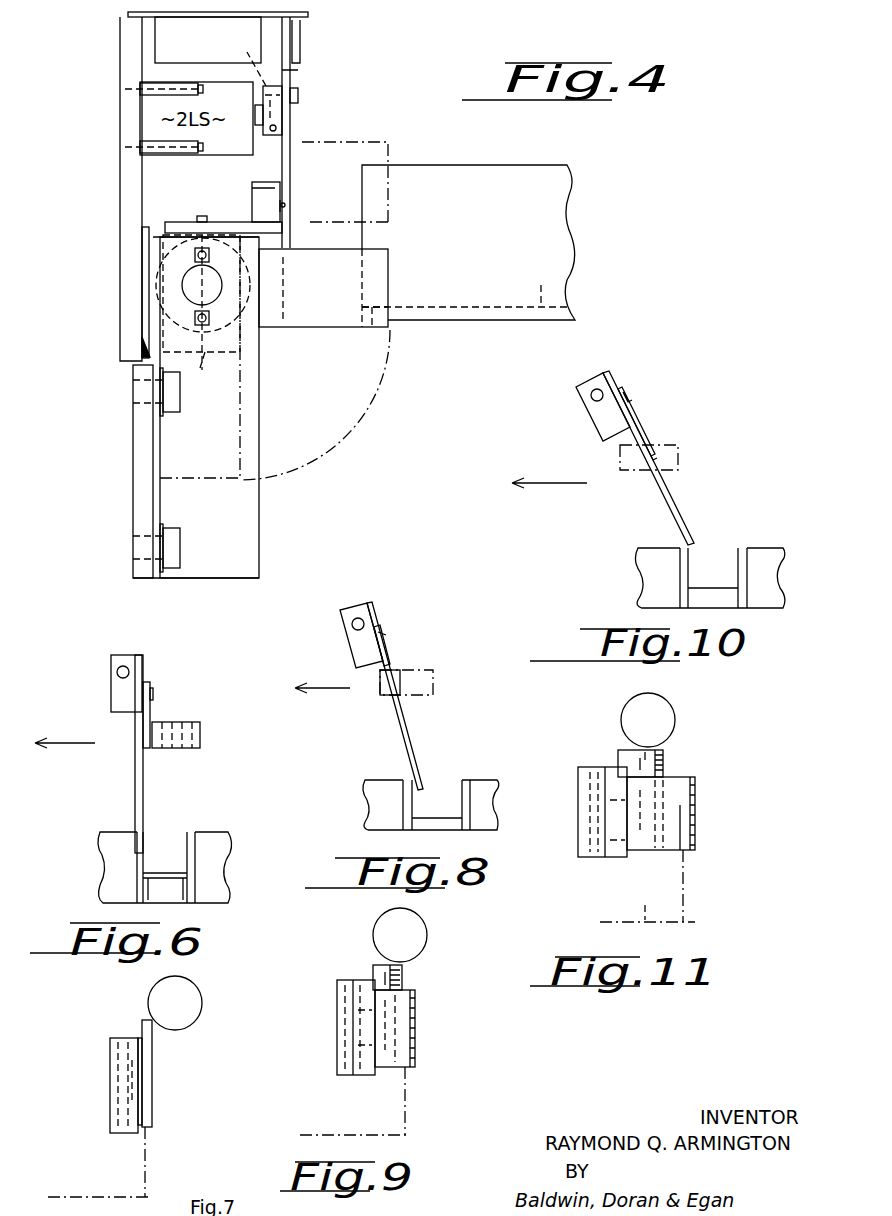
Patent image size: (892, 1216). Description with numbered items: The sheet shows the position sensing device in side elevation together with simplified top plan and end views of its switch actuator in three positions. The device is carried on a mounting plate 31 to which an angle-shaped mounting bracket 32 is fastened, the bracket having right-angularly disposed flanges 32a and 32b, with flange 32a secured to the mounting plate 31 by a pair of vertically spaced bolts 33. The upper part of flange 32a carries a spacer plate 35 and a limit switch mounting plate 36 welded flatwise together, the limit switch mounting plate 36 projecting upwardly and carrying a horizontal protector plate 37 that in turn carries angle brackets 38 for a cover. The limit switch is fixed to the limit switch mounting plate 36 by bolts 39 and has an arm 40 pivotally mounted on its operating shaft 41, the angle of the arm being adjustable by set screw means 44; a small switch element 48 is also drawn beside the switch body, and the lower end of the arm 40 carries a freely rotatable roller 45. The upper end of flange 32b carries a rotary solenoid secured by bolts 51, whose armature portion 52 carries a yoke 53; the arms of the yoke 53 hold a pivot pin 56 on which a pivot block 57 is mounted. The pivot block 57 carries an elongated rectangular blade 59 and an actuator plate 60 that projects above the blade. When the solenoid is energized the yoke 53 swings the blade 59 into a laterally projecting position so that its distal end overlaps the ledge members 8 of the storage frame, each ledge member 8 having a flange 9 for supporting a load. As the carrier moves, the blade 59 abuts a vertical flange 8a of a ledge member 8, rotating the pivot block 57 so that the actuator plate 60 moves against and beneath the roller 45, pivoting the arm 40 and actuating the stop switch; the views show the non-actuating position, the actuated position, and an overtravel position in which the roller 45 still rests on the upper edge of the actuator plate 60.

In FIG. 4, the ledge member 8 is at (578, 186).
In FIG. 10, the ledge member 8 is at (785, 555).
In FIG. 6, the ledge member 8 is at (225, 836).
In FIG. 8, the ledge member 8 is at (495, 782).
In FIG. 11, the ledge member 8 is at (695, 925).
In FIG. 7, the ledge member 8 is at (150, 1195).
In FIG. 9, the ledge member 8 is at (415, 1133).
In FIG. 4, the vertical flange 8a is at (500, 188).
In FIG. 10, the vertical flange 8a is at (640, 575).
In FIG. 6, the vertical flange 8a is at (115, 880).
In FIG. 8, the vertical flange 8a is at (380, 800).
In FIG. 11, the vertical flange 8a is at (690, 878).
In FIG. 9, the vertical flange 8a is at (410, 1092).
In FIG. 4, the flange 9 is at (466, 282).
In FIG. 10, the flange 9 is at (773, 588).
In FIG. 6, the flange 9 is at (100, 854).
In FIG. 8, the flange 9 is at (485, 810).
In FIG. 11, the flange 9 is at (645, 905).
In FIG. 7, the flange 9 is at (100, 1190).
In FIG. 9, the flange 9 is at (358, 1132).
In FIG. 4, the mounting plate 31 is at (133, 502).
In FIG. 4, the mounting bracket 32 is at (240, 550).
In FIG. 4, the flange 32a is at (160, 444).
In FIG. 4, the flange 32b is at (259, 492).
In FIG. 4, the bolts 33 is at (180, 392).
In FIG. 4, the spacer plate 35 is at (145, 290).
In FIG. 4, the limit switch mounting plate 36 is at (120, 190).
In FIG. 4, the protector plate 37 is at (308, 15).
In FIG. 4, the angle brackets 38 is at (160, 35).
In FIG. 4, the bolts 39 is at (204, 90).
In FIG. 4, the arm 40 is at (298, 70).
In FIG. 4, the operating shaft 41 is at (244, 62).
In FIG. 4, the set screw means 44 is at (270, 135).
In FIG. 4, the roller 45 is at (262, 200).
In FIG. 10, the roller 45 is at (680, 462).
In FIG. 6, the roller 45 is at (192, 735).
In FIG. 8, the roller 45 is at (435, 682).
In FIG. 11, the roller 45 is at (670, 716).
In FIG. 7, the roller 45 is at (198, 1005).
In FIG. 9, the roller 45 is at (420, 930).
In FIG. 4, the switch plunger 48 is at (298, 95).
In FIG. 4, the bolts 51 is at (195, 250).
In FIG. 4, the armature portion 52 is at (250, 278).
In FIG. 4, the yoke 53 is at (240, 362).
In FIG. 4, the pivot pin 56 is at (212, 373).
In FIG. 10, the pivot block 57 is at (580, 410).
In FIG. 6, the pivot block 57 is at (122, 654).
In FIG. 8, the pivot block 57 is at (340, 630).
In FIG. 11, the pivot block 57 is at (578, 832).
In FIG. 7, the pivot block 57 is at (110, 1093).
In FIG. 9, the pivot block 57 is at (337, 1027).
In FIG. 4, the blade 59 is at (388, 262).
In FIG. 10, the blade 59 is at (683, 522).
In FIG. 6, the blade 59 is at (143, 800).
In FIG. 8, the blade 59 is at (405, 735).
In FIG. 11, the blade 59 is at (680, 820).
In FIG. 7, the blade 59 is at (142, 1077).
In FIG. 9, the blade 59 is at (385, 1022).
In FIG. 4, the actuator plate 60 is at (225, 220).
In FIG. 10, the actuator plate 60 is at (630, 418).
In FIG. 6, the actuator plate 60 is at (150, 703).
In FIG. 8, the actuator plate 60 is at (385, 652).
In FIG. 11, the actuator plate 60 is at (663, 757).
In FIG. 7, the actuator plate 60 is at (152, 1047).
In FIG. 9, the actuator plate 60 is at (402, 970).